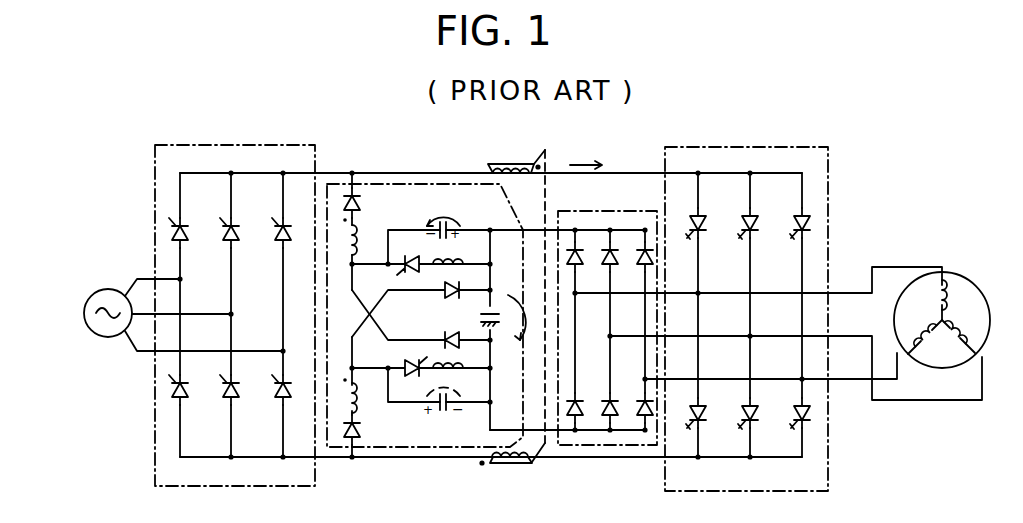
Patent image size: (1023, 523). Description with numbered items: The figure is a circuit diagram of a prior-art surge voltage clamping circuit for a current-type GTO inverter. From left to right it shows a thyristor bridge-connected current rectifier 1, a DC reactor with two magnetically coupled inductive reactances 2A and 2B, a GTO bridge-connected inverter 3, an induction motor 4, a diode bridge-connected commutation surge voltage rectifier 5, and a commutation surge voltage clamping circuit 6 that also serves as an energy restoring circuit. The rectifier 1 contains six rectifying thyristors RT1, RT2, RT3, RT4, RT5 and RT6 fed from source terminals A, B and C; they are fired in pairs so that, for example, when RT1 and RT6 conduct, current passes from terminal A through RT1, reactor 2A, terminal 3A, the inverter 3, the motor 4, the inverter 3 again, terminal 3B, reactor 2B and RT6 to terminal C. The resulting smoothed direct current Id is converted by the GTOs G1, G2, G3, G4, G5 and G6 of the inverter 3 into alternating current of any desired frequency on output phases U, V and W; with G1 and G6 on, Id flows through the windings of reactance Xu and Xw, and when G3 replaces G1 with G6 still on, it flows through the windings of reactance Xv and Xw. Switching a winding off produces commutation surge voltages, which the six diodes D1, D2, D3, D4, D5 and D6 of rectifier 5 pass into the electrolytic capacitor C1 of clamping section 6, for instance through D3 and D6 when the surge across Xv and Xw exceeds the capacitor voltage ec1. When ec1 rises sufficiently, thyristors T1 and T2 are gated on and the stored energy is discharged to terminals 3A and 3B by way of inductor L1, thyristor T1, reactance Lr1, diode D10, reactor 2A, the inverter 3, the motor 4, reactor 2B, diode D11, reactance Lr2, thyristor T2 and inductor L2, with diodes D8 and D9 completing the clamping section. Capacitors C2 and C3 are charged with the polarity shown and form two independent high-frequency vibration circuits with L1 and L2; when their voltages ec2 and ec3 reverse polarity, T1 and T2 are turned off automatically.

The thyristor bridge-connected current rectifier 1 is at (230, 145).
The DC reactor inductive reactance 2A is at (511, 162).
The DC reactor inductive reactance 2B is at (509, 466).
The GTO bridge-connected inverter 3 is at (740, 147).
The terminal 3A is at (650, 170).
The terminal 3B is at (648, 461).
The induction motor 4 is at (942, 296).
The diode bridge-connected commutation surge voltage rectifier 5 is at (606, 447).
The commutation surge voltage clamping circuit 6 is at (405, 449).
The rectifying thyristor RT1 is at (203, 217).
The rectifying thyristor RT2 is at (185, 400).
The rectifying thyristor RT3 is at (254, 217).
The rectifying thyristor RT4 is at (236, 400).
The rectifying thyristor RT5 is at (279, 243).
The rectifying thyristor RT6 is at (287, 402).
The diode D1 is at (579, 266).
The diode D2 is at (579, 402).
The diode D3 is at (614, 266).
The diode D4 is at (614, 402).
The diode D5 is at (641, 252).
The diode D6 is at (641, 398).
The diode D8 is at (447, 296).
The diode D9 is at (453, 333).
The diode D10 is at (362, 205).
The diode D11 is at (362, 430).
The ordinary thyristor T1 is at (409, 253).
The ordinary thyristor T2 is at (408, 359).
The turning-off inductor L1 is at (457, 250).
The turning-off inductor L2 is at (462, 370).
The reactance Lr1 is at (363, 236).
The reactance Lr2 is at (363, 395).
The electrolytic capacitor C1 is at (500, 319).
The capacitor C2 is at (443, 237).
The capacitor C3 is at (444, 412).
The GTO G1 is at (690, 224).
The GTO G2 is at (690, 414).
The GTO G3 is at (741, 224).
The GTO G4 is at (741, 414).
The GTO G5 is at (793, 224).
The GTO G6 is at (793, 414).
The terminal A is at (148, 280).
The terminal B is at (183, 303).
The terminal C is at (205, 341).
The U-phase U is at (757, 281).
The V-phase V is at (794, 358).
The W-phase W is at (769, 367).
The smoothed direct current Id is at (597, 165).
The voltage across capacitor C1 ec1 is at (525, 317).
The voltage across capacitor C2 ec2 is at (443, 212).
The voltage across capacitor C3 ec3 is at (443, 384).
The reactance of first U-phase winding Xu is at (959, 302).
The reactance of second V-phase winding Xv is at (946, 351).
The reactance of third W-phase winding Xw is at (905, 323).